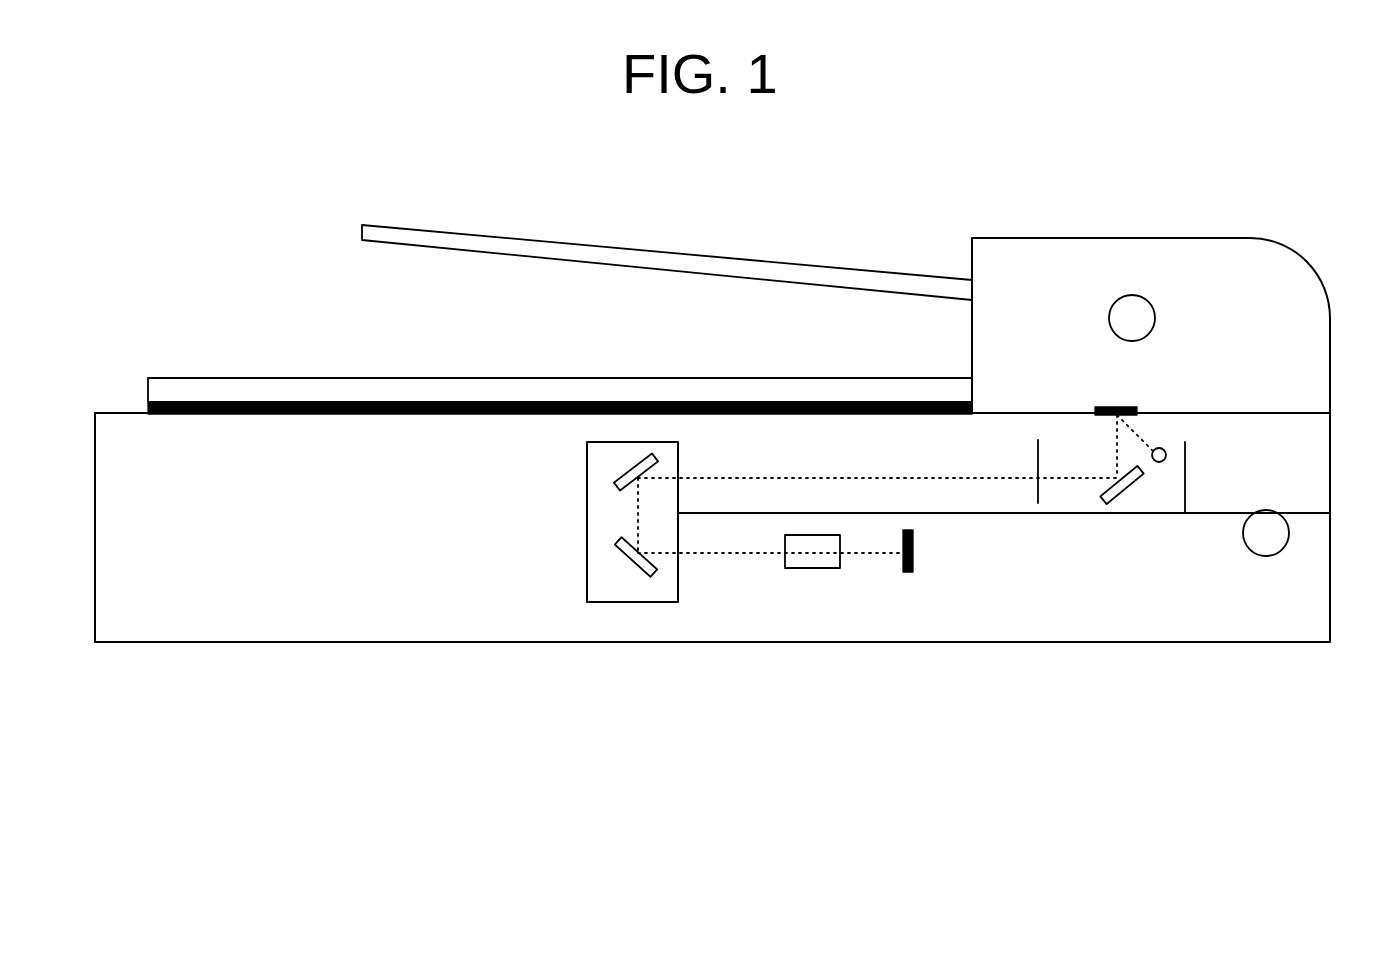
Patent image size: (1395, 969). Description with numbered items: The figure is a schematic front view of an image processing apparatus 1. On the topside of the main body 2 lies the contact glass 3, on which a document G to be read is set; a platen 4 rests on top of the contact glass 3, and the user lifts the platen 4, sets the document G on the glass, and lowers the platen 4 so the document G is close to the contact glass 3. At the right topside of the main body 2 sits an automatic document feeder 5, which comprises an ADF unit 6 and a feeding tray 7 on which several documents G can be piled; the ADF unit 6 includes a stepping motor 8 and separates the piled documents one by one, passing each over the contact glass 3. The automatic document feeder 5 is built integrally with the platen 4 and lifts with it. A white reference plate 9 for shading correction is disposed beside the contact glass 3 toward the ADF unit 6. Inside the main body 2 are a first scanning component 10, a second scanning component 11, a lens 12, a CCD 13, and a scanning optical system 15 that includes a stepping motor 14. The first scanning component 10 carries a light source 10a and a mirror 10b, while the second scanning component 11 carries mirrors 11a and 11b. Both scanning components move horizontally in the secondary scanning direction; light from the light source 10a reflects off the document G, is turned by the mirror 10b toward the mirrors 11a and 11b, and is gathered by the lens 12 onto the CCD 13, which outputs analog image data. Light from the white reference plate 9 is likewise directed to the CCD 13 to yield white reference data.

The image processing apparatus 1 is at (213, 268).
The main body 2 is at (427, 642).
The contact glass 3 is at (396, 415).
The platen 4 is at (450, 378).
The automatic document feeder 5 is at (1003, 212).
The ADF unit 6 is at (1170, 238).
The feeding tray 7 is at (677, 252).
The stepping motor 8 is at (1155, 318).
The white reference plate 9 is at (1137, 408).
The first scanning component 10 is at (1185, 500).
The light source 10a is at (1166, 455).
The mirror 10b is at (1122, 495).
The second scanning component 11 is at (587, 530).
The mirror 11a is at (618, 472).
The mirror 11b is at (620, 555).
The lens 12 is at (812, 568).
The CCD 13 is at (913, 552).
The stepping motor 14 is at (1289, 533).
The scanning optical system 15 is at (1067, 622).
The document G is at (235, 402).